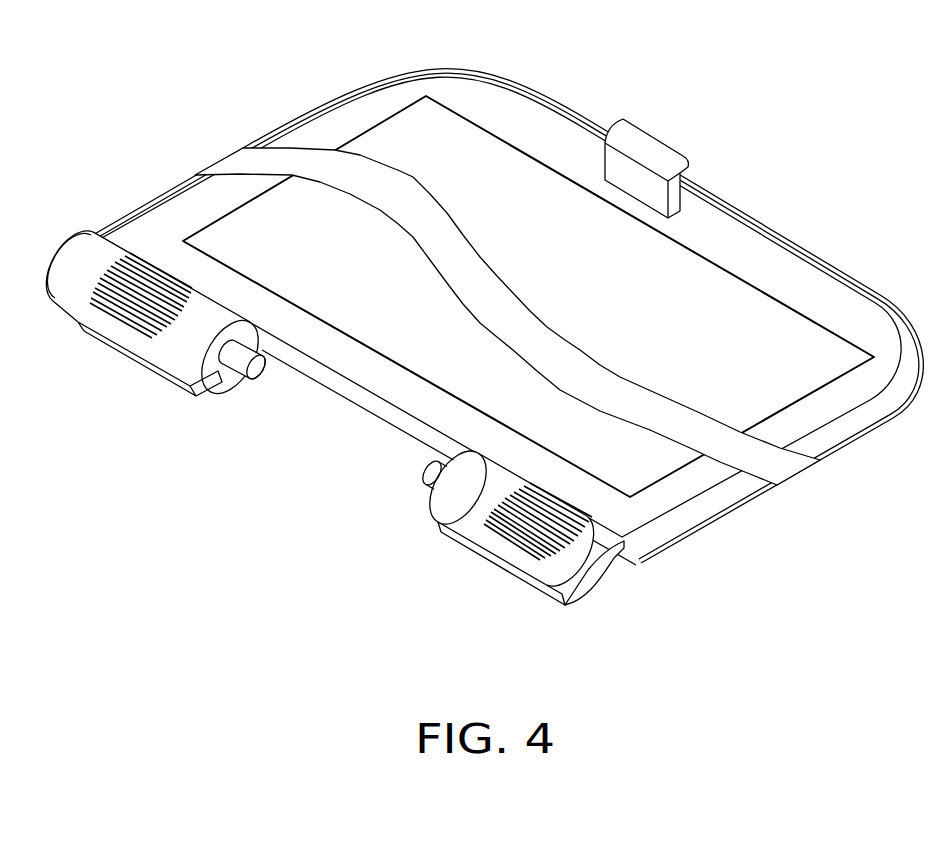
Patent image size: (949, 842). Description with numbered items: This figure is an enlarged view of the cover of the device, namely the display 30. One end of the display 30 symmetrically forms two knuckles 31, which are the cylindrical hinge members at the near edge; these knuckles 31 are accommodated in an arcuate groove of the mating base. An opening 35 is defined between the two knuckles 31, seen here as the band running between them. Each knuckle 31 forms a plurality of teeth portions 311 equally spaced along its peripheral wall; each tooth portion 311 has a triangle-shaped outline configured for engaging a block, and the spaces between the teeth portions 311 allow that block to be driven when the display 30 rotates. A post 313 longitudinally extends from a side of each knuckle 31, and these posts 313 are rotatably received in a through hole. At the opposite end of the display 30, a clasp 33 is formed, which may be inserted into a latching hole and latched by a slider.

The display 30 is at (162, 44).
The knuckle 31 is at (472, 539).
The teeth portion 311 is at (497, 533).
The post 313 is at (239, 355).
The clasp 33 is at (648, 160).
The opening 35 is at (302, 407).